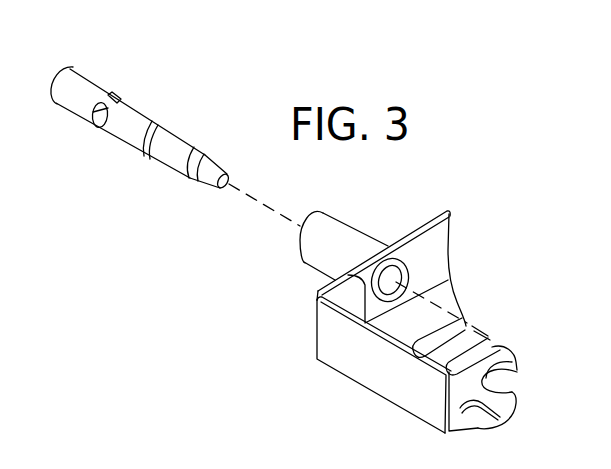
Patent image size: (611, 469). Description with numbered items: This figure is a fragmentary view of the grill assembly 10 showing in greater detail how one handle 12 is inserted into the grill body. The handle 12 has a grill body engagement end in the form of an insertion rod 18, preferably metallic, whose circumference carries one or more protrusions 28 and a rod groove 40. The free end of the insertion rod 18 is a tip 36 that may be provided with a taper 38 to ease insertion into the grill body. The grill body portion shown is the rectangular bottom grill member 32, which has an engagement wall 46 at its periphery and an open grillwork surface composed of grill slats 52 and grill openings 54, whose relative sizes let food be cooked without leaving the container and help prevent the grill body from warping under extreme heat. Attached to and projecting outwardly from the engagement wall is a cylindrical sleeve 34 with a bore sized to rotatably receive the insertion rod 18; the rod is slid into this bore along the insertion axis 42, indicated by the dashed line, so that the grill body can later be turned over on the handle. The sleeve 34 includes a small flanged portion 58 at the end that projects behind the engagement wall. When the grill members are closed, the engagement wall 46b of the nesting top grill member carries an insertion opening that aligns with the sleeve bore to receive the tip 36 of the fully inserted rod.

The grill assembly 10 is at (477, 152).
The handle 12 is at (137, 141).
The insertion rod 18 is at (83, 90).
The protrusion 28 is at (116, 98).
The bottom grill member 32 is at (438, 329).
The cylindrical sleeve 34 is at (333, 227).
The tip 36 is at (222, 189).
The taper 38 is at (215, 158).
The rod groove 40 is at (158, 127).
The insertion axis 42 is at (267, 211).
The engagement wall 46 is at (444, 240).
The engagement wall of top grill member 46b is at (516, 407).
The grill slat 52 is at (488, 325).
The grill opening 54 is at (496, 343).
The flanged portion 58 is at (402, 266).